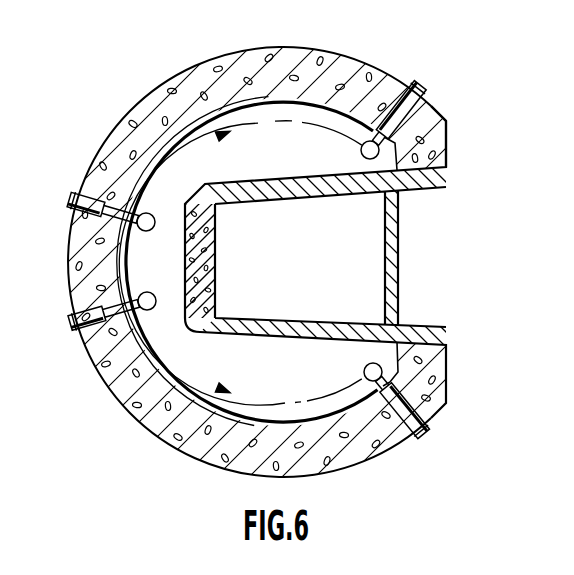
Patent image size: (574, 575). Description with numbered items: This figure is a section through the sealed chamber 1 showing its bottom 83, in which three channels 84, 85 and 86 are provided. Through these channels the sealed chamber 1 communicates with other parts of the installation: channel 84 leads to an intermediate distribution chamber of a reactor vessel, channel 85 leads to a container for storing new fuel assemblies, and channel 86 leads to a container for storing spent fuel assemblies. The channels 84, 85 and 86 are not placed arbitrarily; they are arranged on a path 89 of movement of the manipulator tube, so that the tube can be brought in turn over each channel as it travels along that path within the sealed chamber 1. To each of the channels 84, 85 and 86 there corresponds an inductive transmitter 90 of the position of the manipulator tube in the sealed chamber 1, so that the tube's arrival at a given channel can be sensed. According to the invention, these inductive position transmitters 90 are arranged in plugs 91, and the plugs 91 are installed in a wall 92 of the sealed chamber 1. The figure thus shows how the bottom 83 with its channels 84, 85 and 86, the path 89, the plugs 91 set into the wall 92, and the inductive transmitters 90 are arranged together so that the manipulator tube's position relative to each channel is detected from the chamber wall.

The sealed chamber 1 is at (186, 466).
The bottom 83 is at (265, 137).
The channel 84 is at (165, 252).
The channel 85 is at (361, 152).
The channel 86 is at (364, 368).
The path of movement 89 is at (224, 128).
The inductive transmitter 90 is at (438, 114).
The plug 91 is at (412, 90).
The wall 92 is at (124, 137).